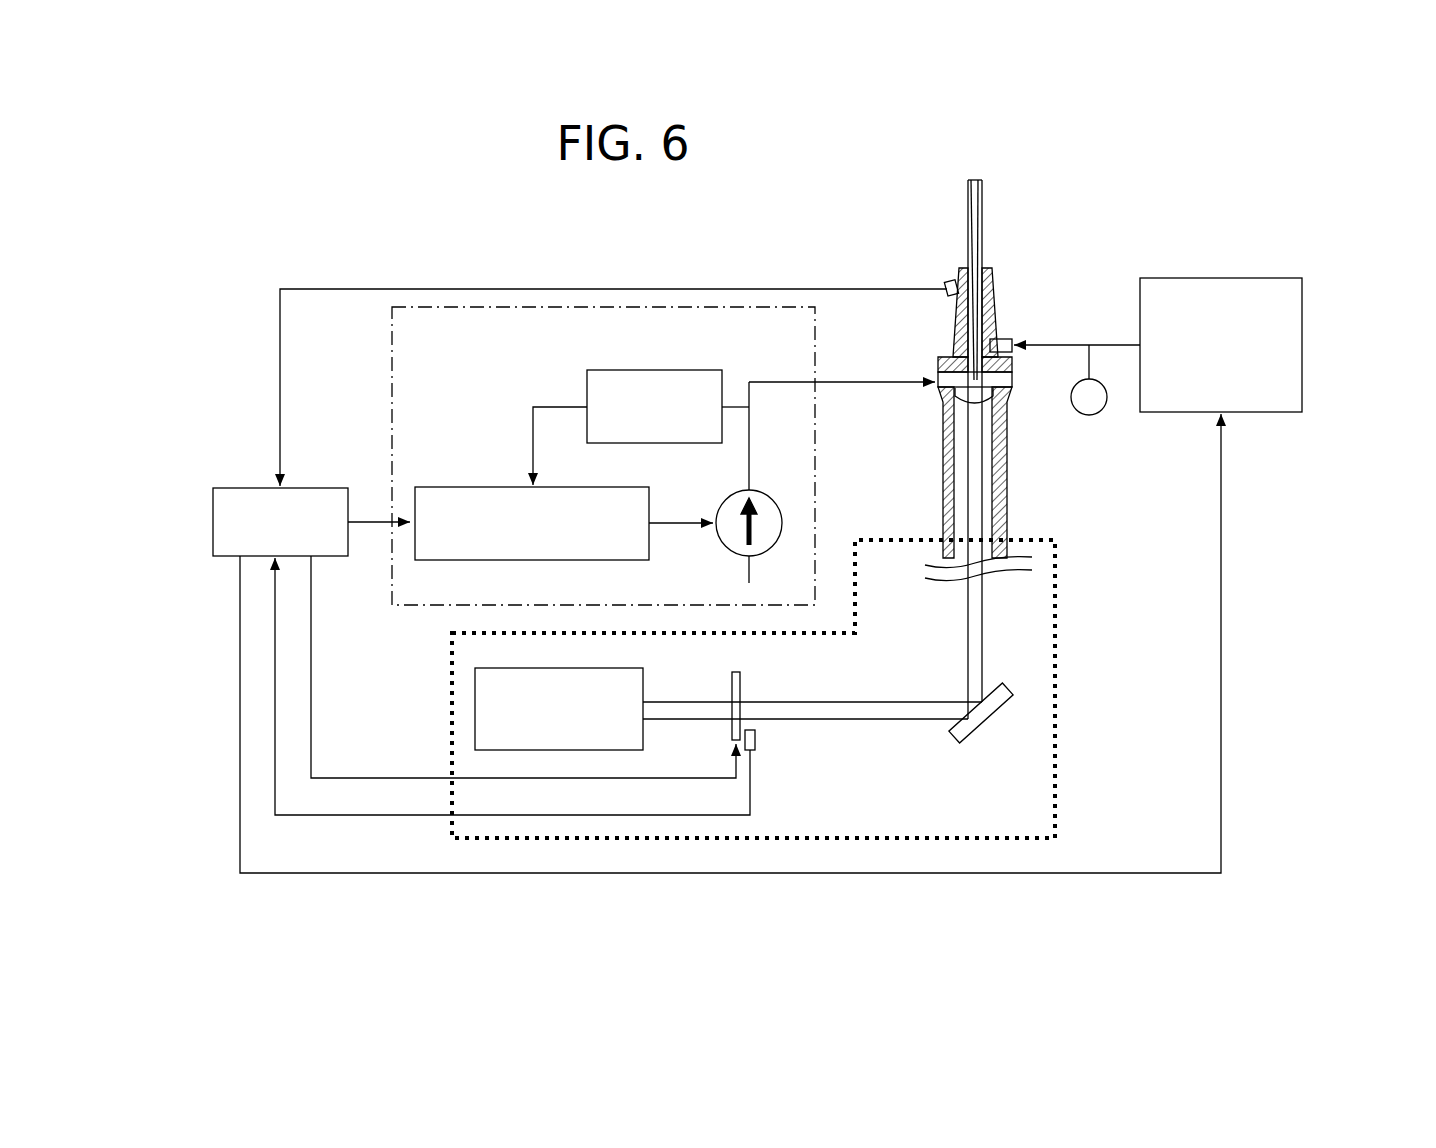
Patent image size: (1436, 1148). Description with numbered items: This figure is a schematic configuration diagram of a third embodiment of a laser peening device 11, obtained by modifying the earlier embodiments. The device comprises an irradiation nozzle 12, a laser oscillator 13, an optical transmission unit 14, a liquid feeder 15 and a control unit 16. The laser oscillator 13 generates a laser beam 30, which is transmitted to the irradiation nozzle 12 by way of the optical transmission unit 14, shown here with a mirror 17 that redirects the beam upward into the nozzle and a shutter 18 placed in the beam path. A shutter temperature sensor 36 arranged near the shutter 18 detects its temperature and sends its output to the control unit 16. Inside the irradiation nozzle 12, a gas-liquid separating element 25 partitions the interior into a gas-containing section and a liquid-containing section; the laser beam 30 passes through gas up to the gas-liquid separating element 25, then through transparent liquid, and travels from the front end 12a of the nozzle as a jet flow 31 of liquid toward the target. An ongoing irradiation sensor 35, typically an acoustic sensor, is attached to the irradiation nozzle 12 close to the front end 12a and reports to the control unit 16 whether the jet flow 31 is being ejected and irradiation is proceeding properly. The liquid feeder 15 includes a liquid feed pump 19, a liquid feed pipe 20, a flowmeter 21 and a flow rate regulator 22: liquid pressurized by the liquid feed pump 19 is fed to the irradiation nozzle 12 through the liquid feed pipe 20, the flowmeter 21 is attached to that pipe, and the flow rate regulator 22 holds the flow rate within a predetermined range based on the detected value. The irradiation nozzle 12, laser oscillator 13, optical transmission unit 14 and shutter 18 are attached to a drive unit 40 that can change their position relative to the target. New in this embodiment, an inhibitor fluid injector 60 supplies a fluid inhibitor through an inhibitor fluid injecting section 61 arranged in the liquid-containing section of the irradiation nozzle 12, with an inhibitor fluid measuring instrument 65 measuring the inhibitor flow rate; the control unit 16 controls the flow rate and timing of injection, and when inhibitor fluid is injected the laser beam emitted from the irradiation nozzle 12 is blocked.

The laser peening device 11 is at (306, 202).
The irradiation nozzle 12 is at (1016, 376).
The front end 12a is at (990, 268).
The laser oscillator 13 is at (643, 684).
The optical transmission unit 14 is at (828, 692).
The liquid feeder 15 is at (390, 375).
The control unit 16 is at (262, 488).
The mirror 17 is at (958, 745).
The shutter 18 is at (740, 688).
The liquid feed pump 19 is at (762, 490).
The liquid feed pipe 20 is at (838, 385).
The flowmeter 21 is at (587, 390).
The flow rate regulator 22 is at (497, 487).
The gas-liquid separating element 25 is at (1003, 416).
The laser beam 30 is at (810, 702).
The jet flow 31 is at (982, 200).
The ongoing irradiation sensor 35 is at (952, 282).
The shutter temperature sensor 36 is at (755, 745).
The drive unit 40 is at (1057, 773).
The inhibitor fluid injector 60 is at (1302, 352).
The inhibitor fluid injecting section 61 is at (1010, 335).
The inhibitor fluid measuring instrument 65 is at (1096, 414).